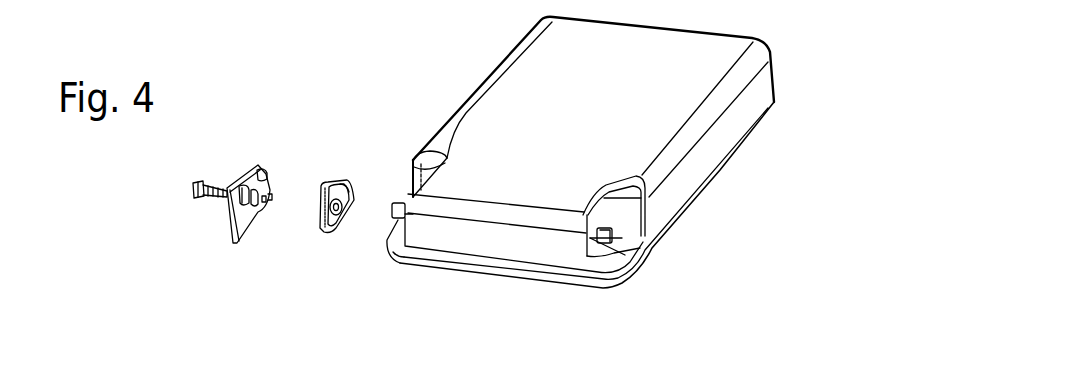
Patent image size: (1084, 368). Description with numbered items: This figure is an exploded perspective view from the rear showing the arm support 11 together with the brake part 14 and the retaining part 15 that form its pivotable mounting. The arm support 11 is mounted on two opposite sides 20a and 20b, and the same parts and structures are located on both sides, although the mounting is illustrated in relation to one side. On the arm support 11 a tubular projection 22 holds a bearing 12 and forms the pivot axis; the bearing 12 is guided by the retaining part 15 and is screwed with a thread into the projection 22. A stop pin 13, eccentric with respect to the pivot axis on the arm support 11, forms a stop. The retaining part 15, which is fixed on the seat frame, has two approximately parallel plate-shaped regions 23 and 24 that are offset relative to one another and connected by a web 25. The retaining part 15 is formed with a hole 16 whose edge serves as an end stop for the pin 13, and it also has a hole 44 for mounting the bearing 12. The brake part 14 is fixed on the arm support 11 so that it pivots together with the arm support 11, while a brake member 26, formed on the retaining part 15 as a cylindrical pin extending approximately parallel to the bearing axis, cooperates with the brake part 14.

The arm support 11 is at (518, 44).
The side of the arm support 20a is at (448, 156).
The side of the arm support 20b is at (612, 172).
The stop pin 13 is at (391, 224).
The tubular projection 22 is at (620, 251).
The bearing 12 is at (206, 177).
The retaining part 15 is at (258, 162).
The plate-shaped region 24 is at (229, 222).
The web 25 is at (241, 172).
The brake member 26 is at (268, 167).
The plate-shaped region 23 is at (275, 188).
The hole 16 is at (257, 211).
The hole 44 is at (270, 206).
The brake part 14 is at (343, 176).